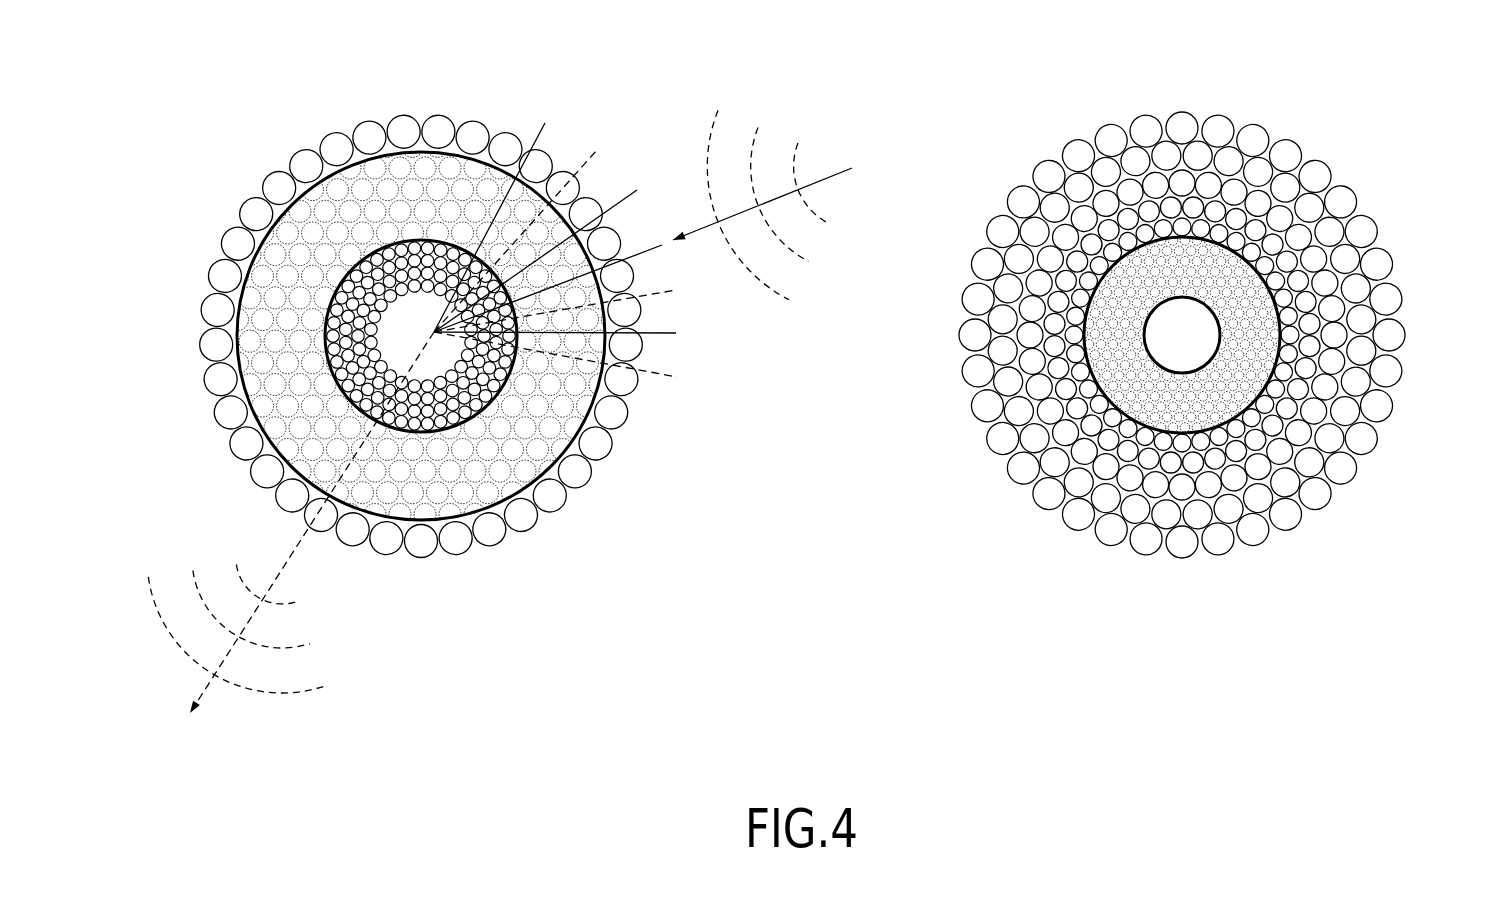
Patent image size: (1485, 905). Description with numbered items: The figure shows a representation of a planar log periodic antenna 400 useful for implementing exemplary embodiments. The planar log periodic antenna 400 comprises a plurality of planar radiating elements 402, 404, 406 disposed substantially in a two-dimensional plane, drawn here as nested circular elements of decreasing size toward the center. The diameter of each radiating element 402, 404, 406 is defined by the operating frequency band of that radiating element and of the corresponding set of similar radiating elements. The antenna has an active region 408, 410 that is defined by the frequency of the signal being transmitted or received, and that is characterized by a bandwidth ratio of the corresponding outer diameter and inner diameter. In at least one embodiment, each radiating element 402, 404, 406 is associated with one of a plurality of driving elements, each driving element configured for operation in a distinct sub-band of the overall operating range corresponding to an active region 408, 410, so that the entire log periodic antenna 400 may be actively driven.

The planar log periodic antenna 400 is at (230, 68).
The planar radiating element 402 is at (205, 294).
The planar radiating element 404 is at (340, 153).
The planar radiating element 406 is at (398, 354).
The active region 408 is at (560, 480).
The active region 410 is at (1248, 262).